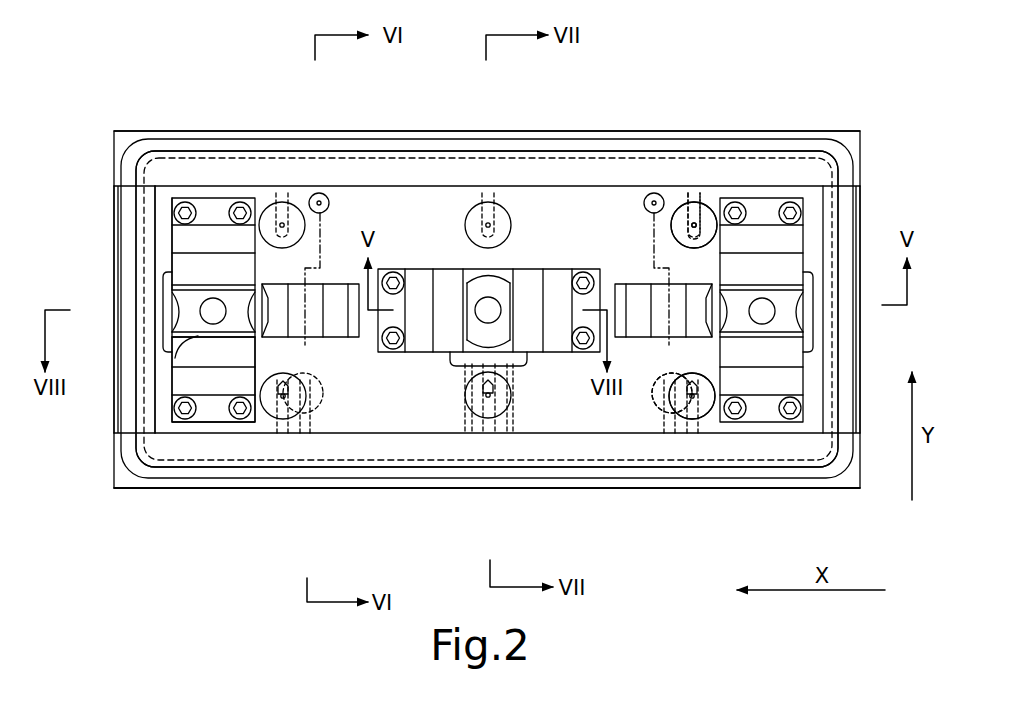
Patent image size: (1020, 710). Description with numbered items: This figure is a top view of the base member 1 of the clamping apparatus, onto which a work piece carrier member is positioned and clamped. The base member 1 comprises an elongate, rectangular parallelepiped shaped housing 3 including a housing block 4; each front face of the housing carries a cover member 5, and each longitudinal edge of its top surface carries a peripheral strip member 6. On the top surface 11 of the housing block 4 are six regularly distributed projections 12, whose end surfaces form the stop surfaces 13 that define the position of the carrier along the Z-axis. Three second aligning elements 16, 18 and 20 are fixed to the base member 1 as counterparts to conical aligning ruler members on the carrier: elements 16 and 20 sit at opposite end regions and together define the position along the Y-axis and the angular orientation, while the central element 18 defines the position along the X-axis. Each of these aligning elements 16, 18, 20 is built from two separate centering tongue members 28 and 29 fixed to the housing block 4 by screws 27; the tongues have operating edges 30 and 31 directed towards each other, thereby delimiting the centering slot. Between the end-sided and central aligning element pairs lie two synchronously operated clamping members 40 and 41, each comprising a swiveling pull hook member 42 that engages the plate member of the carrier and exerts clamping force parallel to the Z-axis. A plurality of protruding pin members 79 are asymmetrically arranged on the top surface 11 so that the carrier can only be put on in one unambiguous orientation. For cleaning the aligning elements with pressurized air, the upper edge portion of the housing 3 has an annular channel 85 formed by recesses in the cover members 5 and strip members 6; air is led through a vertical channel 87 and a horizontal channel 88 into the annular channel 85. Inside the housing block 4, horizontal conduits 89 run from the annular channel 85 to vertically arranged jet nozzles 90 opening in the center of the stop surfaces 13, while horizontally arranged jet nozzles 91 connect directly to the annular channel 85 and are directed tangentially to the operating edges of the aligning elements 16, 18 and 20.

The base member 1 is at (95, 108).
The housing 3 is at (435, 490).
The housing block 4 is at (366, 400).
The cover member 5 is at (115, 400).
The peripheral strip member 6 is at (858, 131).
The top surface 11 is at (580, 223).
The projection 12 is at (300, 202).
The stop surface 13 is at (716, 214).
The second aligning element 16 is at (205, 311).
The second aligning element 18 is at (494, 319).
The second aligning element 20 is at (760, 325).
The screw 27 is at (185, 203).
The centering tongue member 28 is at (205, 203).
The centering tongue member 29 is at (208, 418).
The operating edge 30 is at (193, 285).
The operating edge 31 is at (175, 358).
The clamping member 40 is at (334, 270).
The clamping member 41 is at (655, 278).
The pull hook member 42 is at (305, 320).
The pin member 79 is at (320, 193).
The annular channel 85 is at (533, 168).
The vertical channel 87 is at (668, 414).
The horizontal channel 88 is at (696, 418).
The horizontal conduit 89 is at (708, 206).
The jet nozzle 90 is at (700, 200).
The jet nozzle 91 is at (166, 288).